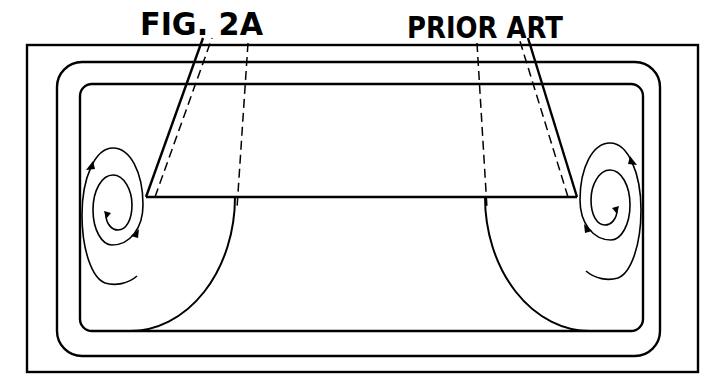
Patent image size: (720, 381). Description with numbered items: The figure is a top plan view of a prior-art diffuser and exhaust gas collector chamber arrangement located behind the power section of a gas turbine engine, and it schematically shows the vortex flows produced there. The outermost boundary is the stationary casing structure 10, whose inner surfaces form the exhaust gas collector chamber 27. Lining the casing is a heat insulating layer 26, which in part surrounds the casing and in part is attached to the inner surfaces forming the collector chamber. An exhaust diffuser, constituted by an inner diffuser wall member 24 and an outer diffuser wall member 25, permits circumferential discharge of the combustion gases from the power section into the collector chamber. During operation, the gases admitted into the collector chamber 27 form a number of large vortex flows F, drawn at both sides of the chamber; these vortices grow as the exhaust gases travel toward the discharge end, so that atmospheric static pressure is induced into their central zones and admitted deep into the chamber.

The casing structure 10 is at (200, 374).
The inner diffuser wall member 24 is at (245, 124).
The outer diffuser wall member 25 is at (180, 104).
The heat insulating layer 26 is at (368, 331).
The exhaust gas collector chamber 27 is at (434, 269).
The vortex flows F is at (143, 221).